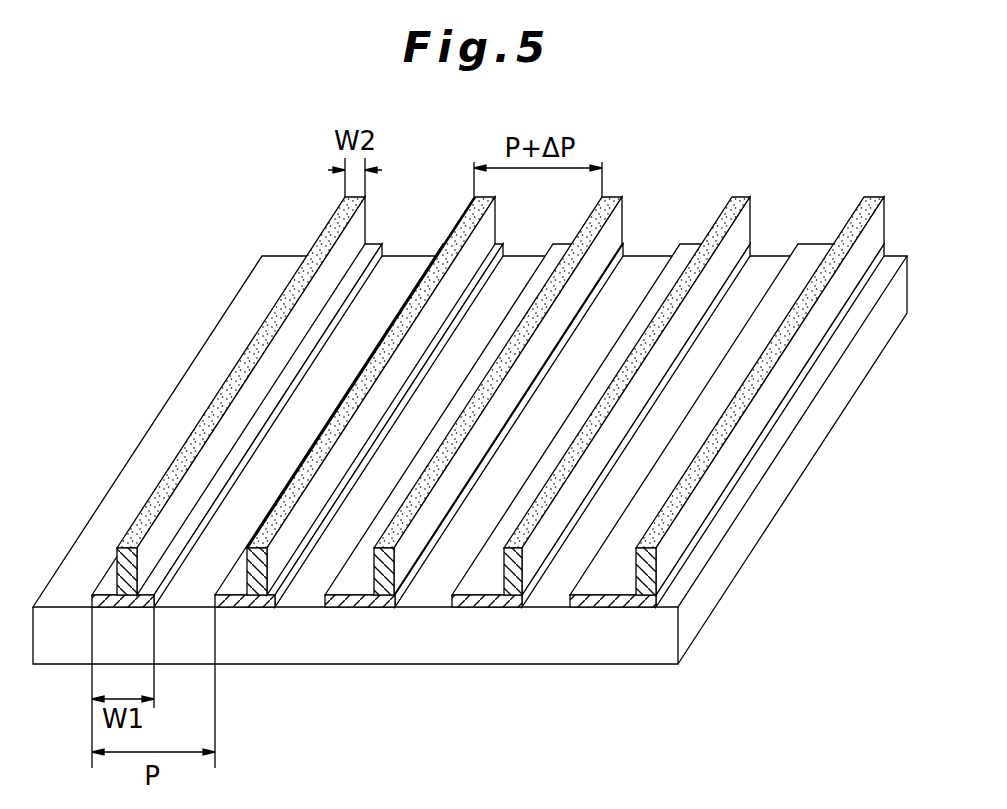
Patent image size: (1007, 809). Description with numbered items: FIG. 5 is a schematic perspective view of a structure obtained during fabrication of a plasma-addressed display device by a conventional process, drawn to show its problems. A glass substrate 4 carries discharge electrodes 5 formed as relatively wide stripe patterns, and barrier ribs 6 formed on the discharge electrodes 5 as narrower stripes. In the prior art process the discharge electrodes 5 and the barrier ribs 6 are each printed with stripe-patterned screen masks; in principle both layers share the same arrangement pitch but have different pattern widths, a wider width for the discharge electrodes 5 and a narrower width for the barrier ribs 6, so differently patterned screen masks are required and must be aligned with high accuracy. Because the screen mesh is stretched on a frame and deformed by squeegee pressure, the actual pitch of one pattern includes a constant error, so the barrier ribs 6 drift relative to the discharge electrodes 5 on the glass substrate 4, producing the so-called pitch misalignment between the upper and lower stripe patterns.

The glass substrate 4 is at (628, 640).
The discharge electrodes 5 is at (477, 608).
The barrier ribs 6 is at (255, 592).